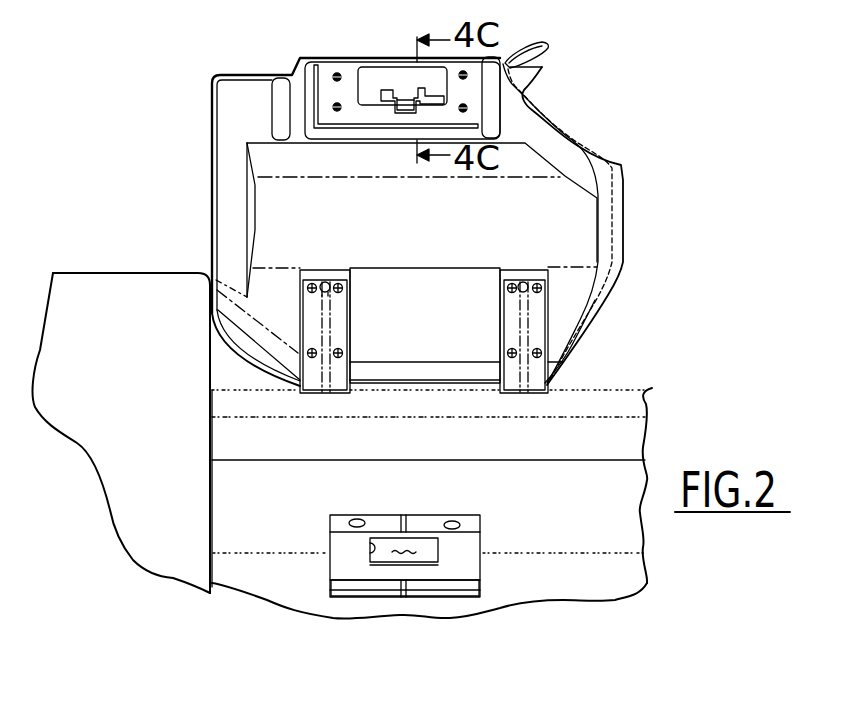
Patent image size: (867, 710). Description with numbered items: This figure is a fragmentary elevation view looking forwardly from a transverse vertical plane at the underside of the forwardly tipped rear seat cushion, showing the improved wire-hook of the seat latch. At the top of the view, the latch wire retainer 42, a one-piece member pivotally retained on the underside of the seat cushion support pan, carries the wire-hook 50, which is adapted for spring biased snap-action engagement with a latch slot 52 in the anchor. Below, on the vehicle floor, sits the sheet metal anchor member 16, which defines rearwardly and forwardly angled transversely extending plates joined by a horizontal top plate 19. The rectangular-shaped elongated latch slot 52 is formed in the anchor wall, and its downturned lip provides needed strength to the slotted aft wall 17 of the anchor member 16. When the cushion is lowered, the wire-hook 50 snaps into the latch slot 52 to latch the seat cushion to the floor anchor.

The anchor member 16 is at (482, 538).
The rearwardly angled transversely extending plate 17 is at (470, 568).
The horizontal top plate 19 is at (468, 517).
The latch wire retainer 42 is at (385, 93).
The wire-hook 50 is at (404, 95).
The latch slot 52 is at (548, 44).